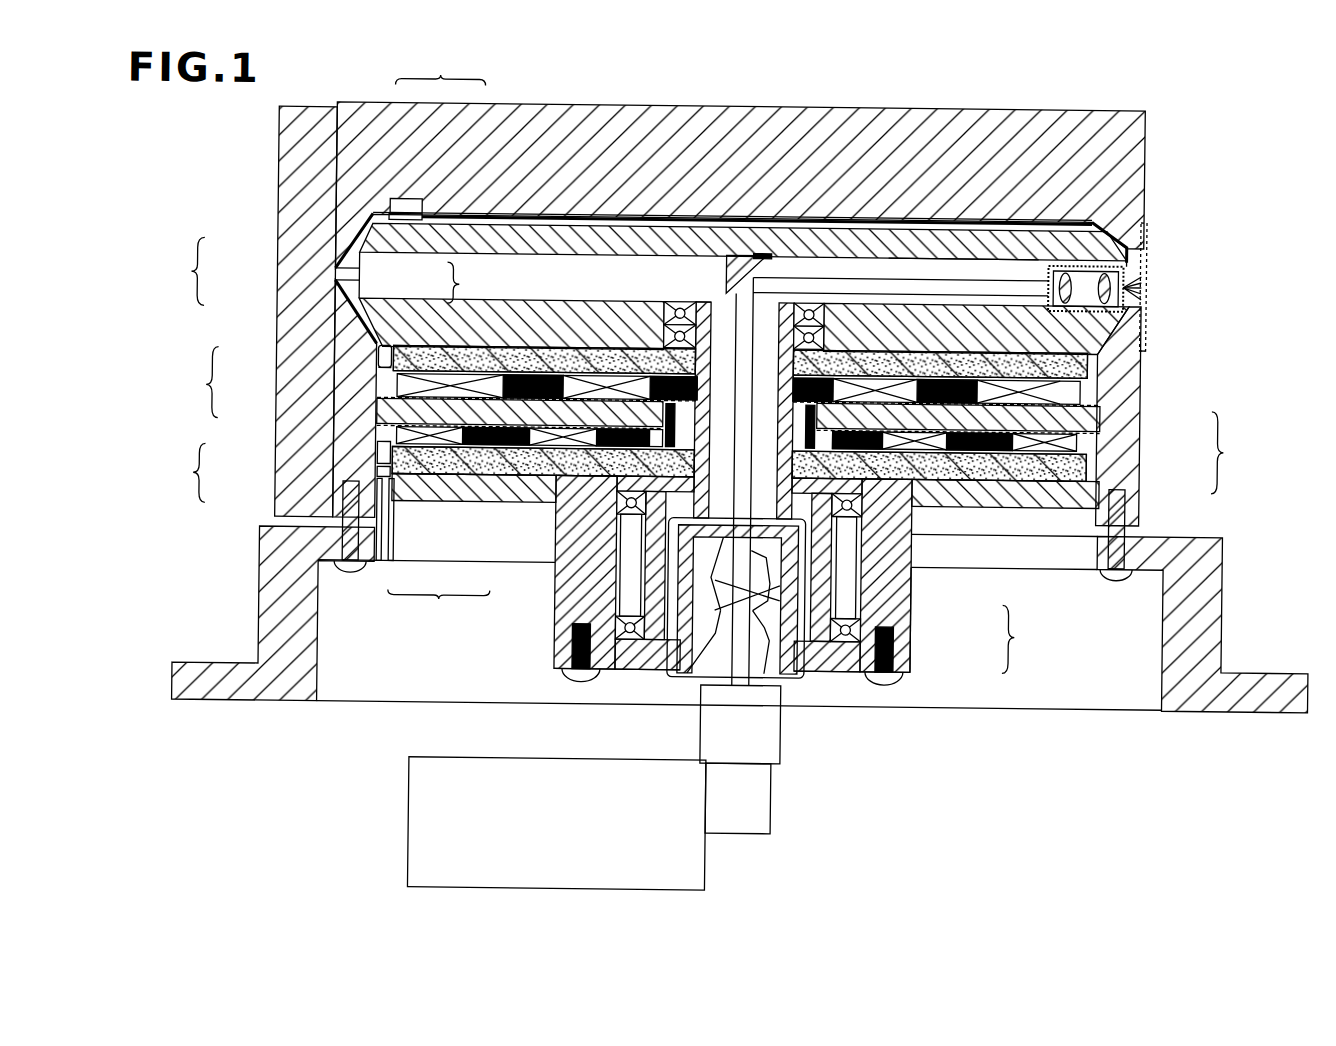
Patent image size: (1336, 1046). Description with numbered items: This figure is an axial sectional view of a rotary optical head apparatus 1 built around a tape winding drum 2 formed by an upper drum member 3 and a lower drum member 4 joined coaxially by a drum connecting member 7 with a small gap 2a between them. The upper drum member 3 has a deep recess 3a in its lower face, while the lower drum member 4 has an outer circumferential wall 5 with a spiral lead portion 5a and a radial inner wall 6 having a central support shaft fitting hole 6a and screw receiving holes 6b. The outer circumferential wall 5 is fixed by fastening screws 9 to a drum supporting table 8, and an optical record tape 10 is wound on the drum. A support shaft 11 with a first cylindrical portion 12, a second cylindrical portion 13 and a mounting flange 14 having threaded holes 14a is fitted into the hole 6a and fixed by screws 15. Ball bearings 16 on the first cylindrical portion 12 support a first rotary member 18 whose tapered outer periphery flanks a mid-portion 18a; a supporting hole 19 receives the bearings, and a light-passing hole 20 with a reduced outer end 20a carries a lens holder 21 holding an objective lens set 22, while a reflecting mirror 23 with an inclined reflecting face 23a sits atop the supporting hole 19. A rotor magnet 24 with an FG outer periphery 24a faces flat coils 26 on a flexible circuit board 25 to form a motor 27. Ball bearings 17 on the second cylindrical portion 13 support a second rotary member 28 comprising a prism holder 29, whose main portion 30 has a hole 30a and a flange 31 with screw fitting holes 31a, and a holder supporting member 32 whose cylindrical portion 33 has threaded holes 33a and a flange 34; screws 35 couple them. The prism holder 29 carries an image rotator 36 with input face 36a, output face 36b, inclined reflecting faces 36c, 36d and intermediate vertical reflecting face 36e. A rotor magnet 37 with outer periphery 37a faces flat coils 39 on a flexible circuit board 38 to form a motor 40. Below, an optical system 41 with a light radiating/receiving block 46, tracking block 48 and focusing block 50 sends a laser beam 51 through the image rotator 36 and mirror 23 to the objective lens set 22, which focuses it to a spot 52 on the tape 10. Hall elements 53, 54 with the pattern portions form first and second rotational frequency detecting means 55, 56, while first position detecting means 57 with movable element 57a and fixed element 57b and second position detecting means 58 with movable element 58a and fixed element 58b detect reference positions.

The rotary optical head apparatus 1 is at (1236, 374).
The tape winding drum 2 is at (187, 283).
The gap 2a is at (1146, 293).
The upper drum member 3 is at (332, 202).
The recess 3a is at (567, 213).
The lower drum member 4 is at (340, 332).
The outer circumferential wall 5 is at (1135, 391).
The lead portion 5a is at (1146, 342).
The inner wall 6 is at (1113, 378).
The support shaft fitting hole 6a is at (701, 440).
The screw receiving holes 6b is at (660, 420).
The drum connecting member 7 is at (282, 150).
The drum supporting table 8 is at (265, 573).
The fastening screws 9 is at (355, 580).
The optical record tape 10 is at (1145, 225).
The support shaft 11 is at (577, 578).
The first cylindrical portion 12 is at (700, 304).
The second cylindrical portion 13 is at (617, 583).
The mounting flange 14 is at (624, 572).
The threaded holes 14a is at (556, 508).
The screws 15 is at (700, 432).
The ball bearings 16 is at (662, 323).
The ball bearings 17 is at (915, 521).
The first rotary member 18 is at (869, 228).
The mid-portion 18a is at (334, 279).
The supporting hole 19 is at (824, 313).
The light-passing hole 20 is at (917, 263).
The outer end 20a is at (1146, 280).
The lens holder 21 is at (1085, 250).
The objective lens set 22 is at (1050, 285).
The reflecting mirror 23 is at (724, 270).
The reflecting face 23a is at (774, 256).
The rotor magnet 24 is at (390, 378).
The outer periphery 24a is at (389, 372).
The flexible circuit board 25 is at (392, 392).
The flat coils 26 is at (392, 369).
The motor 27 is at (198, 381).
The second rotary member 28 is at (1046, 650).
The prism holder 29 is at (918, 660).
The main portion 30 is at (805, 548).
The hole 30a is at (655, 567).
The flange 31 is at (835, 677).
The screw fitting holes 31a is at (572, 680).
The holder supporting member 32 is at (918, 634).
The cylindrical portion 33 is at (912, 554).
The threaded holes 33a is at (573, 654).
The flange 34 is at (995, 496).
The screws 35 is at (591, 684).
The image rotator 36 is at (815, 702).
The input face 36a is at (708, 678).
The output face 36b is at (720, 573).
The input side inclined reflecting face 36c is at (703, 666).
The output side inclined reflecting face 36d is at (714, 634).
The intermediate vertical reflecting face 36e is at (820, 590).
The rotor magnet 37 is at (1085, 450).
The outer periphery 37a is at (376, 446).
The flexible circuit board 38 is at (1088, 428).
The flat coils 39 is at (504, 435).
The motor 40 is at (1234, 453).
The optical system 41 is at (788, 795).
The light radiating/receiving block 46 is at (713, 850).
The tracking block 48 is at (777, 820).
The focusing block 50 is at (785, 747).
The laser beam 51 is at (968, 289).
The spot 52 is at (1146, 287).
The Hall element 53 is at (385, 352).
The Hall element 54 is at (376, 462).
The first rotational frequency detecting means 55 is at (467, 282).
The second rotational frequency detecting means 56 is at (186, 472).
The first position detecting means 57 is at (441, 69).
The movable element 57a is at (428, 218).
The fixed element 57b is at (403, 203).
The second position detecting means 58 is at (438, 604).
The movable element 58a is at (394, 548).
The fixed element 58b is at (381, 548).